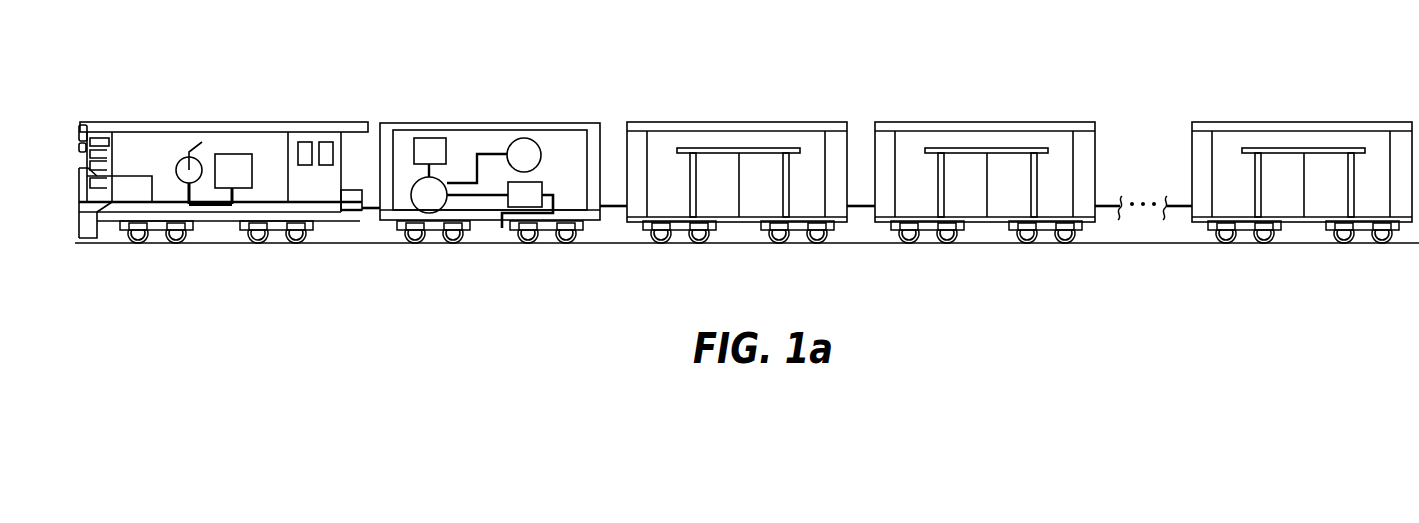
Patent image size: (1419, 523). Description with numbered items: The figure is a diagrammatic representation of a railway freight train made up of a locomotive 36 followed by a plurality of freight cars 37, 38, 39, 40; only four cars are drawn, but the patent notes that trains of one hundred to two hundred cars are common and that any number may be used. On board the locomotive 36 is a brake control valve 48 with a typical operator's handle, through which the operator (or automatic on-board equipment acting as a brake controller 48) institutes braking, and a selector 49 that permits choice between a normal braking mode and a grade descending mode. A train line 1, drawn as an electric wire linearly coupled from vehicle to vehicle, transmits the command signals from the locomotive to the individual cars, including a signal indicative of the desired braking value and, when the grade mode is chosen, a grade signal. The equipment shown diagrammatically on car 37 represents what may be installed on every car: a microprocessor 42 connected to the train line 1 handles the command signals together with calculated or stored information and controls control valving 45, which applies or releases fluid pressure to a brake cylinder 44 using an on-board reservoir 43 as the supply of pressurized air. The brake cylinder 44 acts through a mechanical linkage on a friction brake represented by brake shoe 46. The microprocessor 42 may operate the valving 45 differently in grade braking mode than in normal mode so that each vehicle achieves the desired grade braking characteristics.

The train line 1 is at (372, 213).
The locomotive 36 is at (223, 161).
The car 37 is at (490, 184).
The car 38 is at (707, 122).
The car 39 is at (968, 122).
The car 40 is at (1332, 122).
The microprocessor 42 is at (414, 148).
The reservoir 43 is at (541, 150).
The brake cylinder 44 is at (507, 205).
The control valving 45 is at (443, 181).
The brake shoe 46 is at (511, 238).
The brake control valve 48 is at (176, 168).
The selector 49 is at (233, 154).